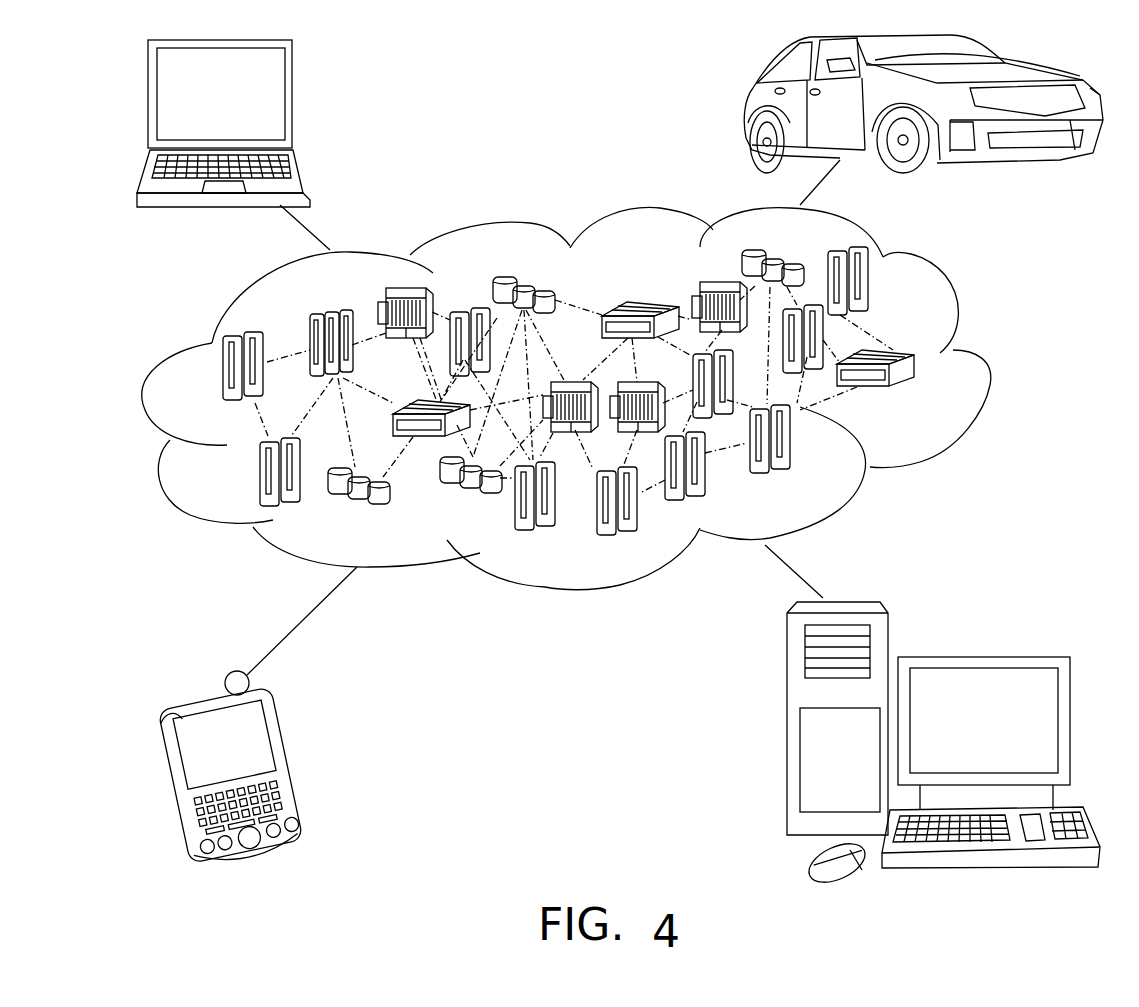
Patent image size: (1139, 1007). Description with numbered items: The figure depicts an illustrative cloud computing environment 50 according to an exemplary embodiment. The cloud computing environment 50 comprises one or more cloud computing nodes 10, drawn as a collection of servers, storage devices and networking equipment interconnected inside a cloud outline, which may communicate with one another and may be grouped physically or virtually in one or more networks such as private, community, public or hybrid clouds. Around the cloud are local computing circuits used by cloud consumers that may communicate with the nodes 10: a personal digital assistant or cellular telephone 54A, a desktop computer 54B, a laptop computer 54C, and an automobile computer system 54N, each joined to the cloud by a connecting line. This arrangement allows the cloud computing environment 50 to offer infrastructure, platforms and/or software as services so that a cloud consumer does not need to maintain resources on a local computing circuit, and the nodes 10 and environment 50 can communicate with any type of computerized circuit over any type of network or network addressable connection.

The cloud computing nodes 10 is at (925, 398).
The cloud computing environment 50 is at (977, 363).
The personal digital assistant or cellular telephone 54A is at (290, 763).
The desktop computer 54B is at (980, 652).
The laptop computer 54C is at (292, 100).
The automobile computer system 54N is at (747, 108).